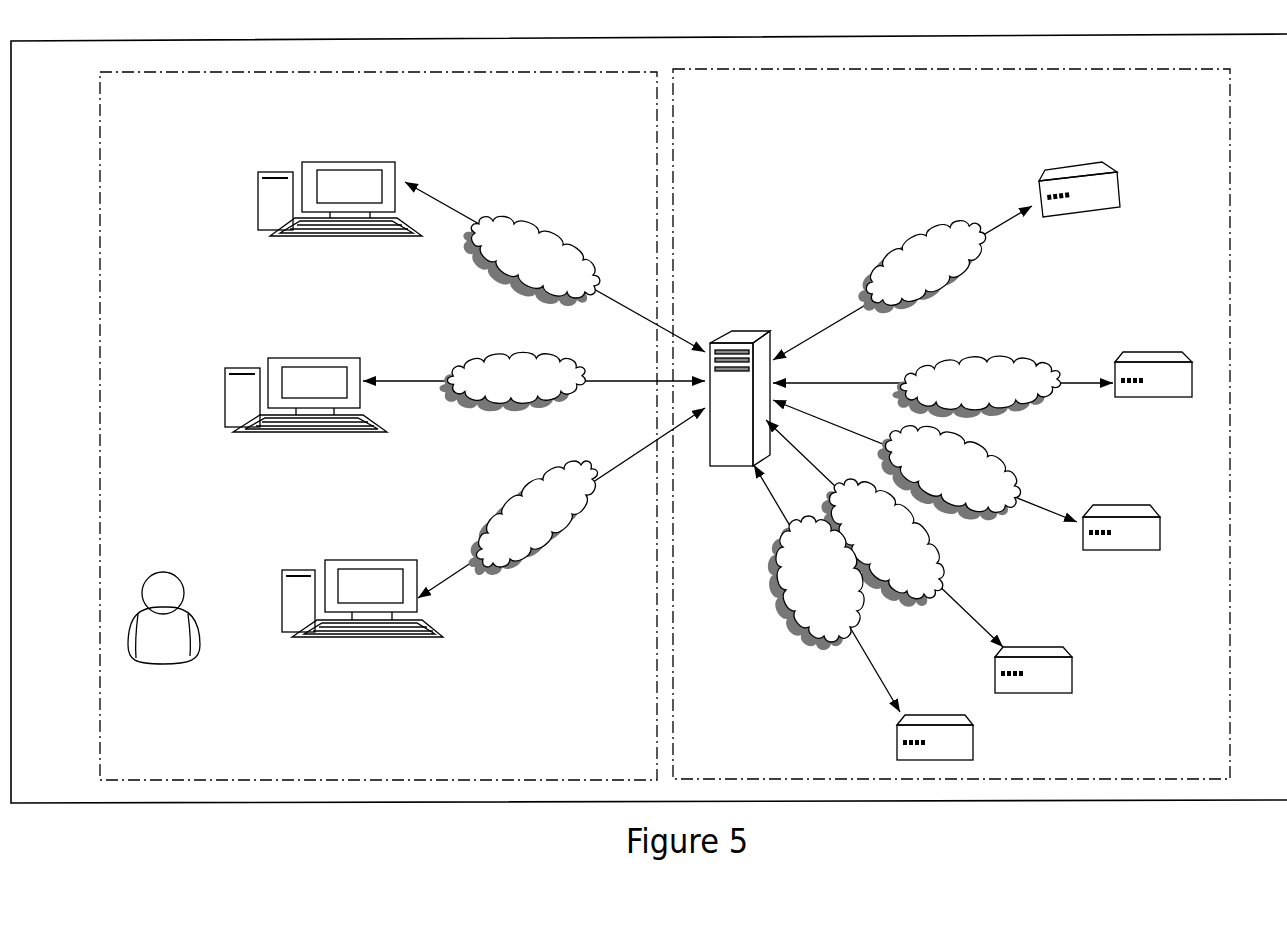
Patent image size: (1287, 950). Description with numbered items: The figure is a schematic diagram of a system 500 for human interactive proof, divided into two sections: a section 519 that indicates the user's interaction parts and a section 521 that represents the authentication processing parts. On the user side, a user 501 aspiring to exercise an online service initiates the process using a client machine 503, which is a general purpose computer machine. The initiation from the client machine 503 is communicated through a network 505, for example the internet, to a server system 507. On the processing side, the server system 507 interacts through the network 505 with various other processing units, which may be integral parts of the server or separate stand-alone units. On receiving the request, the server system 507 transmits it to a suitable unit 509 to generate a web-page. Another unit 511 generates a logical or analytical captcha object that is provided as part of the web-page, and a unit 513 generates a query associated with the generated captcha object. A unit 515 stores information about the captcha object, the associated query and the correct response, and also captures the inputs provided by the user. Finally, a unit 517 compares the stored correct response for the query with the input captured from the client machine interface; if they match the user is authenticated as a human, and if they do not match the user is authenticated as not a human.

The system 500 is at (90, 98).
The user 501 is at (163, 566).
The client machine 503 is at (345, 160).
The network 505 is at (557, 236).
The server system 507 is at (733, 330).
The unit 509 is at (1065, 175).
The unit 511 is at (1165, 352).
The unit 513 is at (1162, 518).
The unit 515 is at (1048, 647).
The unit 517 is at (983, 745).
The section 519 is at (189, 138).
The section 521 is at (763, 128).